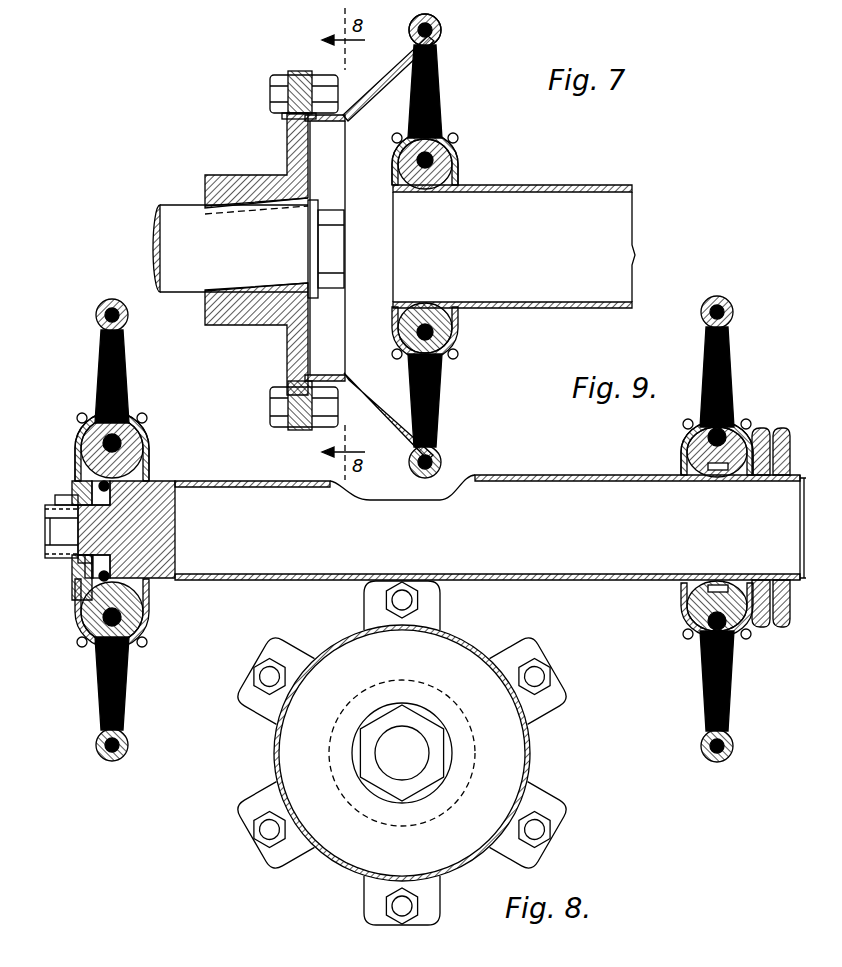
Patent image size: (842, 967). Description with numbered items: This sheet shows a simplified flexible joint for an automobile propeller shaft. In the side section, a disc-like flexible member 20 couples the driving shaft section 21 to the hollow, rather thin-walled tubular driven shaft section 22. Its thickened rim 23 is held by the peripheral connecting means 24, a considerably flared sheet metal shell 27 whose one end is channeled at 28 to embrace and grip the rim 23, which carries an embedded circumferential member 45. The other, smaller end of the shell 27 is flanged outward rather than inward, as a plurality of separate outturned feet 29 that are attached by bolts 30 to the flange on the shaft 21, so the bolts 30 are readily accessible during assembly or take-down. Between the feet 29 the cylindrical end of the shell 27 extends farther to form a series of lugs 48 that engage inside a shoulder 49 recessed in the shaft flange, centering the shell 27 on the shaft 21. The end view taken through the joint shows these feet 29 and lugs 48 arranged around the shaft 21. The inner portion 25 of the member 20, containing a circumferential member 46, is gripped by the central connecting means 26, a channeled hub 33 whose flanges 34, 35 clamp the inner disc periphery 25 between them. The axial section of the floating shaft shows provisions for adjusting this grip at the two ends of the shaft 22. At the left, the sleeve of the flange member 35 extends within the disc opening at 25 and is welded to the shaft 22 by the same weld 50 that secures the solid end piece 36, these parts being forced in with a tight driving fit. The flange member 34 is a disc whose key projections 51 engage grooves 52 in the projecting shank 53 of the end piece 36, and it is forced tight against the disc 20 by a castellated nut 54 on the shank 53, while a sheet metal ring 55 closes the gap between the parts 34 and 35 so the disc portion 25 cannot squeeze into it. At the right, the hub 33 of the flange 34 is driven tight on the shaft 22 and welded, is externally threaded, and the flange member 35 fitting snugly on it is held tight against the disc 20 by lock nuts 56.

In FIG. 7, the flexible disc-like member 20 is at (442, 410).
In FIG. 9, the flexible disc-like member 20 is at (100, 368).
In FIG. 7, the driving shaft section 21 is at (160, 240).
In FIG. 8, the driving shaft section 21 is at (402, 753).
In FIG. 7, the driven shaft section 22 is at (514, 236).
In FIG. 9, the driven shaft section 22 is at (260, 482).
In FIG. 7, the rim 23 is at (438, 45).
In FIG. 9, the rim 23 is at (98, 305).
In FIG. 7, the peripheral connecting means 24 is at (295, 79).
In FIG. 7, the inner portion 25 is at (450, 160).
In FIG. 9, the inner portion 25 is at (140, 446).
In FIG. 7, the central connecting means 26 is at (436, 234).
In FIG. 9, the central connecting means 26 is at (414, 522).
In FIG. 7, the sheet metal shell 27 is at (362, 100).
In FIG. 7, the channeled end 28 is at (445, 17).
In FIG. 7, the outturned feet 29 is at (318, 430).
In FIG. 8, the outturned feet 29 is at (432, 607).
In FIG. 7, the bolts 30 is at (272, 92).
In FIG. 9, the hub 33 is at (748, 481).
In FIG. 7, the gripping flange 34 is at (390, 162).
In FIG. 9, the gripping flange 34 is at (76, 455).
In FIG. 7, the gripping flange member 35 is at (462, 172).
In FIG. 9, the gripping flange member 35 is at (150, 452).
In FIG. 9, the end piece 36 is at (168, 583).
In FIG. 7, the circumferential member in outer rim 45 is at (432, 36).
In FIG. 9, the circumferential member in outer rim 45 is at (125, 322).
In FIG. 7, the circumferential member in inner rim 46 is at (455, 150).
In FIG. 9, the circumferential member in inner rim 46 is at (126, 440).
In FIG. 7, the lugs 48 is at (288, 143).
In FIG. 8, the lugs 48 is at (462, 634).
In FIG. 7, the shoulder 49 is at (288, 114).
In FIG. 9, the weld 50 is at (100, 582).
In FIG. 9, the key projections 51 is at (78, 560).
In FIG. 9, the grooves 52 is at (88, 572).
In FIG. 9, the shank 53 is at (60, 546).
In FIG. 9, the castellated nut 54 is at (58, 497).
In FIG. 9, the sheet metal ring 55 is at (98, 602).
In FIG. 9, the lock nuts 56 is at (770, 625).